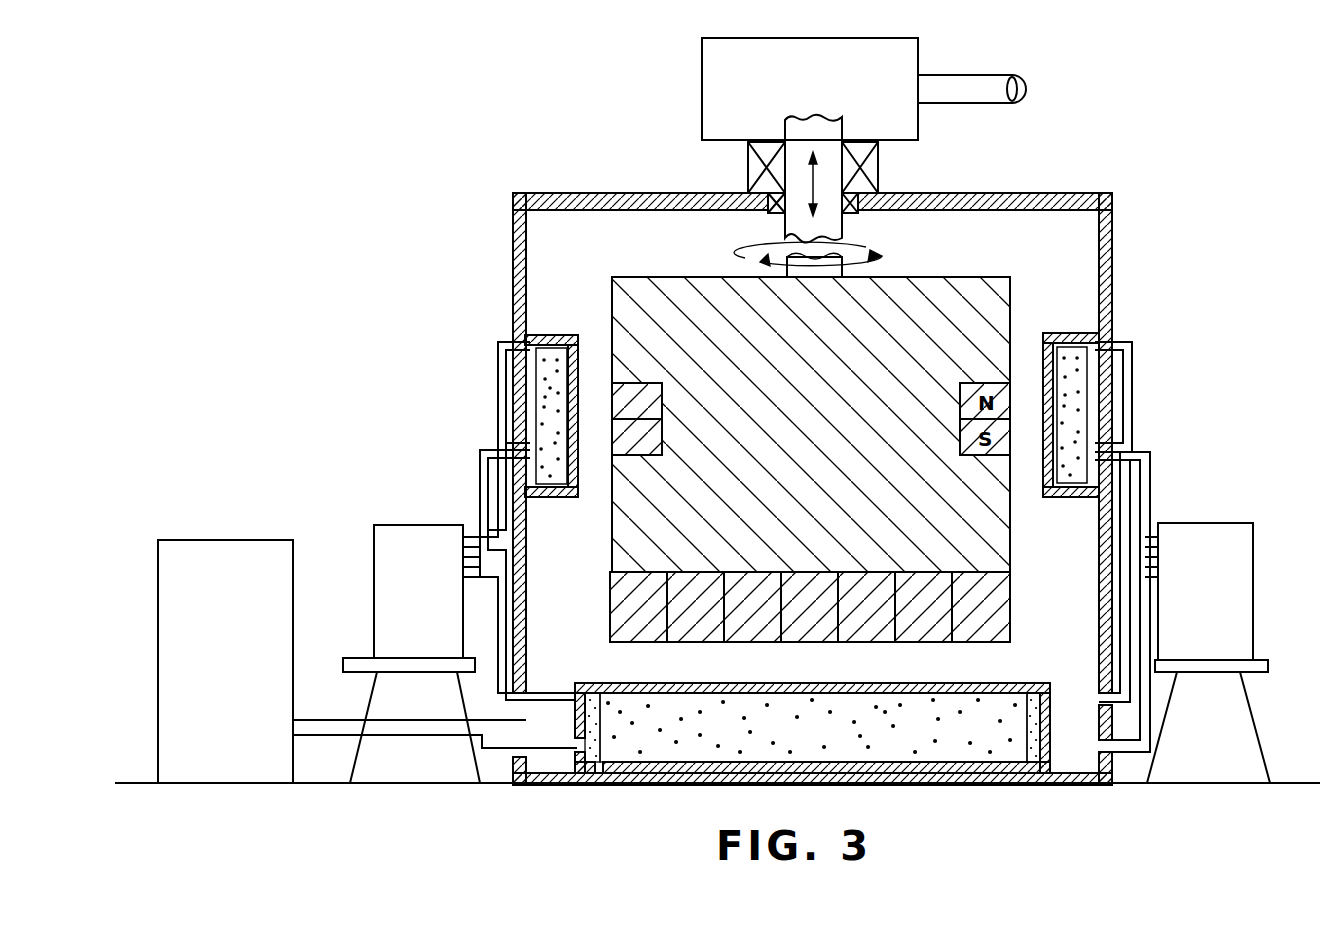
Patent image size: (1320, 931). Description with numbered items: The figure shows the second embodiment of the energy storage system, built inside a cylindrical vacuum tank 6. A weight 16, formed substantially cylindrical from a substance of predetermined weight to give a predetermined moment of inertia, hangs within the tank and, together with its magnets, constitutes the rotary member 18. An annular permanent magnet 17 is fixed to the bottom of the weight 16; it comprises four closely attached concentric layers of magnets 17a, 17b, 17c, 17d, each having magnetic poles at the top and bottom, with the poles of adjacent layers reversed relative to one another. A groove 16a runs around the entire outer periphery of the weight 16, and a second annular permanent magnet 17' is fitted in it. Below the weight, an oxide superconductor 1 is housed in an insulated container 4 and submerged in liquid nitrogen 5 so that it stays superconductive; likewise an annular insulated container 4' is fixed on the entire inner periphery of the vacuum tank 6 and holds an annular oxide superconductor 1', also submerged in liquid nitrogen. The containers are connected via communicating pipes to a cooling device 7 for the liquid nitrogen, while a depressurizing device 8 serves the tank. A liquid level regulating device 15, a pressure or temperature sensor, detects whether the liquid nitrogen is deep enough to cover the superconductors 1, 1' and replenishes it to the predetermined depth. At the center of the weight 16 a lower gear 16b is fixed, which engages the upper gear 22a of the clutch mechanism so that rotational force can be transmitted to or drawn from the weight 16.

The oxide superconductor 1 is at (813, 761).
The oxide superconductor 1' is at (811, 415).
The insulated container 4 is at (812, 756).
The insulated container 4' is at (810, 415).
The liquid nitrogen 5 is at (600, 720).
The vacuum tank 6 is at (1113, 255).
The cooling device 7 is at (408, 525).
The depressurizing device 8 is at (243, 548).
The liquid level regulating device 15 is at (512, 342).
The weight 16 is at (1000, 290).
The groove 16a is at (622, 397).
The lower gear 16b is at (842, 248).
The annular permanent magnet 17 is at (810, 625).
The annular permanent magnet 17' is at (611, 477).
The layer of magnet 17a is at (820, 640).
The layer of magnet 17b is at (878, 640).
The layer of magnet 17c is at (943, 640).
The layer of magnet 17d is at (993, 642).
The rotary member 18 is at (648, 264).
The upper gear 22a is at (790, 248).